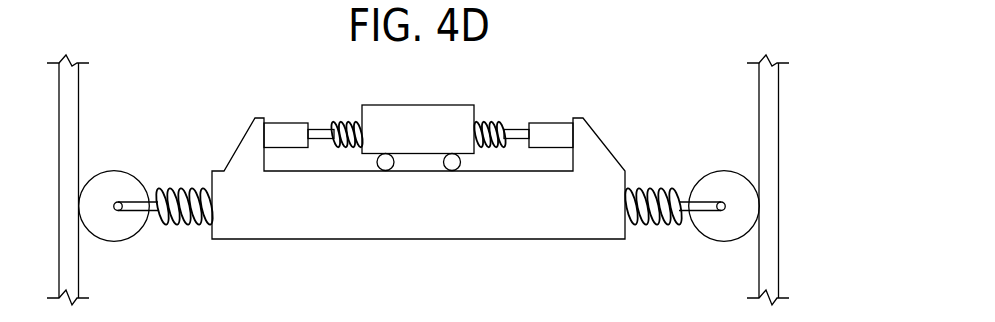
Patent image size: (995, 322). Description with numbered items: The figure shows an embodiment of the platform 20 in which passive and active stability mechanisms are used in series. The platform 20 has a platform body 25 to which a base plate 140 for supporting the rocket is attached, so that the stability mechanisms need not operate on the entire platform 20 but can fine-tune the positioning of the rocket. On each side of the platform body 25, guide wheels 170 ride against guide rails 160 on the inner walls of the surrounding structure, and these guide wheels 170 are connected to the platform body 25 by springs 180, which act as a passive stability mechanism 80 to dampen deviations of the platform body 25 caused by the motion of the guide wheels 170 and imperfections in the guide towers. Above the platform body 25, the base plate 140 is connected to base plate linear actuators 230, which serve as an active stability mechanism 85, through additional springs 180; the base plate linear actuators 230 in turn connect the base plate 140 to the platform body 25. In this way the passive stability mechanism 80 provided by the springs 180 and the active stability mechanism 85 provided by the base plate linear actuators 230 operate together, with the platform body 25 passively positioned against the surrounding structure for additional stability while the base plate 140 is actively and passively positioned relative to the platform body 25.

The platform 20 is at (418, 211).
The platform body 25 is at (460, 240).
The passive stability mechanism 80 is at (422, 178).
The active stability mechanism 85 is at (297, 122).
The base plate 140 is at (432, 105).
The guide rail 160 is at (79, 120).
The guide wheel 170 is at (122, 242).
The spring 180 is at (182, 187).
The base plate linear actuator 230 is at (280, 122).